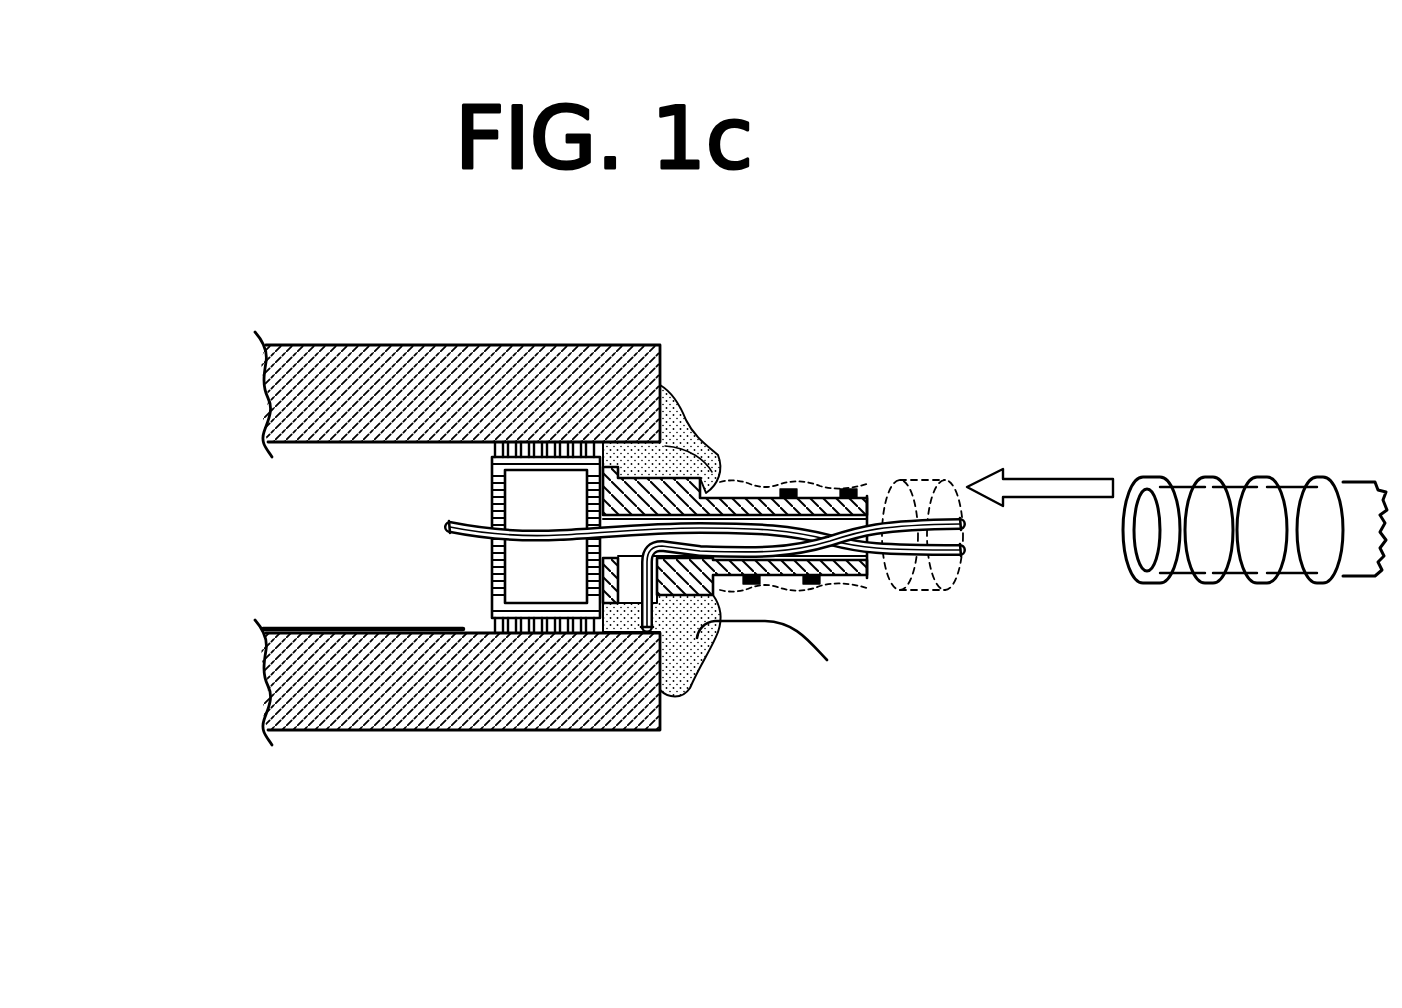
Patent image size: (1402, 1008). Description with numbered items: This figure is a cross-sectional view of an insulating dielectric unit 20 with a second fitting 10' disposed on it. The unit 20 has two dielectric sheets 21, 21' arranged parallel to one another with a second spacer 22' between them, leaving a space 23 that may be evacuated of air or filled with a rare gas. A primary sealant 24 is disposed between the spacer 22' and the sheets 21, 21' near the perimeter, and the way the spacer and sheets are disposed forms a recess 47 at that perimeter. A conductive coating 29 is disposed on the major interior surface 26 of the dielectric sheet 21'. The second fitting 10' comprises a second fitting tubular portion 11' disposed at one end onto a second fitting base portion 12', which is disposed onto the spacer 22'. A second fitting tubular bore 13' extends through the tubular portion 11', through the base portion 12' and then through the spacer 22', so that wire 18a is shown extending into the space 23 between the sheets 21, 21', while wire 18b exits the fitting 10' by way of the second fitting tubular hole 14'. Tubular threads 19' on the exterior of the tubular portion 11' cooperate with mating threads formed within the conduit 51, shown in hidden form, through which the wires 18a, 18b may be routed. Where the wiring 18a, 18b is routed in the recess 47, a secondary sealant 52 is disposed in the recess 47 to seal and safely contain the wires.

The second fitting 10' is at (908, 440).
The second fitting tubular portion 11' is at (862, 591).
The second fitting base portion 12' is at (676, 409).
The second fitting tubular bore 13' is at (1040, 513).
The second fitting tubular hole 14' is at (797, 662).
The wire 18a is at (480, 540).
The wire 18b is at (698, 640).
The tubular threads 19' is at (800, 489).
The insulating dielectric unit 20 is at (695, 294).
The dielectric sheet 21 is at (457, 364).
The dielectric sheet 21' is at (460, 727).
The second spacer 22' is at (383, 521).
The space 23 is at (362, 559).
The primary sealant 24 is at (563, 440).
The major interior surface 26 is at (273, 680).
The conductive coating 29 is at (347, 628).
The recess 47 is at (648, 463).
The conduit 51 is at (1225, 490).
The secondary sealant 52 is at (672, 688).